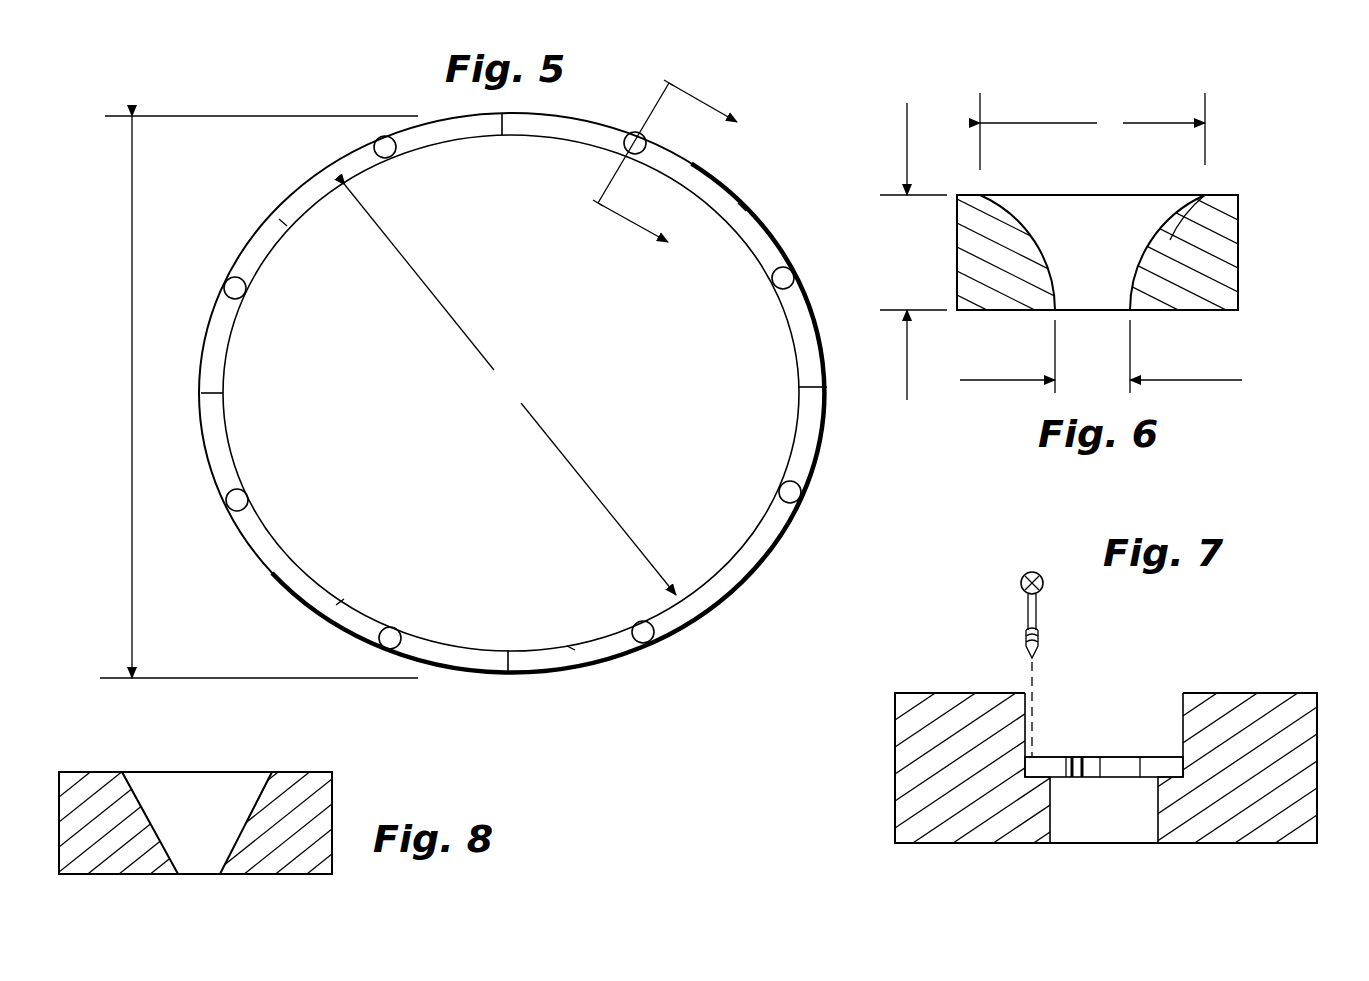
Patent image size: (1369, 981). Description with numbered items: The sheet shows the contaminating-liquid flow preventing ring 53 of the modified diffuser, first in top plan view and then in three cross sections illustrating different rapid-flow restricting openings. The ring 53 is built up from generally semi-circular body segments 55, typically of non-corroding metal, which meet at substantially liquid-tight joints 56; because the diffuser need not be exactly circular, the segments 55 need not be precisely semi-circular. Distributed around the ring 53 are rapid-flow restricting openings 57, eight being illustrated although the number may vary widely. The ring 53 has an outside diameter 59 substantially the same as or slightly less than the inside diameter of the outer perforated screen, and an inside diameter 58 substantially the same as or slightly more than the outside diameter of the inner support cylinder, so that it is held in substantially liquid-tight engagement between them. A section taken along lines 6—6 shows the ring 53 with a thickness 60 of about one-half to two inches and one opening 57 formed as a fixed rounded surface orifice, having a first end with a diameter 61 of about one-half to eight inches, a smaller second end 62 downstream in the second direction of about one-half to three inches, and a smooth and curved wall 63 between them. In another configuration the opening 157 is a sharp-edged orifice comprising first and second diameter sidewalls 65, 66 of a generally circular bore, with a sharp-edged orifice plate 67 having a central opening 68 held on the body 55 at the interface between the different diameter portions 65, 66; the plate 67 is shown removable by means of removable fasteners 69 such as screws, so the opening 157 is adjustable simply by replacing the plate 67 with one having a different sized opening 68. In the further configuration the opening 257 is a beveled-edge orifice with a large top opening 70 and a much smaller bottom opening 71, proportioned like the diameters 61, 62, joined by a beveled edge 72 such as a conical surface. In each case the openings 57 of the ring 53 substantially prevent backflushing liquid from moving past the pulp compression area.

In FIG. 5, the ring 53 is at (714, 632).
In FIG. 5, the body segments 55 is at (283, 222).
In FIG. 6, the body segments 55 is at (1230, 244).
In FIG. 7, the body segments 55 is at (1293, 748).
In FIG. 8, the body segments 55 is at (312, 808).
In FIG. 5, the joints 56 is at (503, 137).
In FIG. 5, the rapid-flow restricting openings 57 is at (385, 146).
In FIG. 6, the rapid-flow restricting openings 57 is at (1099, 177).
In FIG. 5, the inside diameter 58 is at (510, 390).
In FIG. 5, the outside diameter 59 is at (259, 397).
In FIG. 6, the thickness 60 is at (913, 251).
In FIG. 6, the first end diameter 61 is at (1092, 131).
In FIG. 6, the second end 62 is at (1101, 356).
In FIG. 6, the smooth curved wall 63 is at (1178, 197).
In FIG. 5, the section lines 6- 6 is at (675, 173).
In FIG. 7, the first diameter sidewall 65 is at (1178, 718).
In FIG. 7, the second diameter sidewall 66 is at (1152, 823).
In FIG. 7, the sharp-edged orifice plate 67 is at (1050, 768).
In FIG. 7, the central opening 68 is at (1093, 768).
In FIG. 7, the removable fasteners 69 is at (1026, 575).
In FIG. 7, the opening 157 is at (1093, 678).
In FIG. 8, the large top opening 70 is at (142, 770).
In FIG. 8, the bottom opening 71 is at (195, 876).
In FIG. 8, the beveled edge 72 is at (264, 780).
In FIG. 8, the opening 257 is at (223, 725).